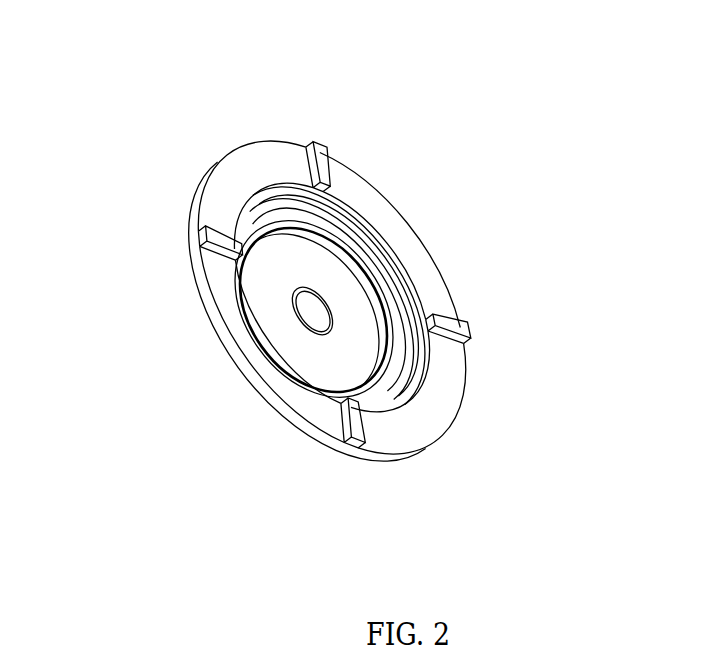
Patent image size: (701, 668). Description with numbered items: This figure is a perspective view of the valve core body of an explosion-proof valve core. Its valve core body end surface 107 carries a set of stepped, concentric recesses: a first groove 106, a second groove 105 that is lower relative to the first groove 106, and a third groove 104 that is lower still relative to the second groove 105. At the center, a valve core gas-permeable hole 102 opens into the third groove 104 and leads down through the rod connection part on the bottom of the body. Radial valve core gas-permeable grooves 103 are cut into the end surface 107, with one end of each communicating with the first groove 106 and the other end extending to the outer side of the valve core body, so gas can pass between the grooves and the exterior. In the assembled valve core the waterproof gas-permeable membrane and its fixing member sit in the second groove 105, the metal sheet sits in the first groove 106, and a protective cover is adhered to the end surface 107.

The valve core gas-permeable hole 102 is at (309, 311).
The valve core gas-permeable grooves 103 is at (194, 237).
The third groove 104 is at (350, 312).
The second groove 105 is at (393, 320).
The first groove 106 is at (430, 372).
The valve core body end surface 107 is at (423, 420).